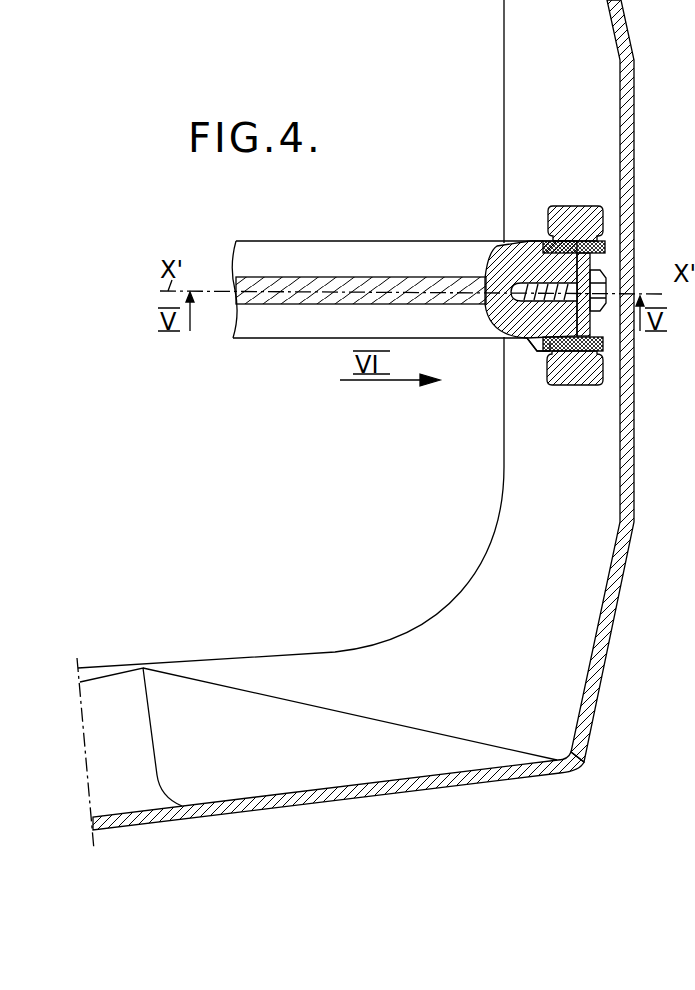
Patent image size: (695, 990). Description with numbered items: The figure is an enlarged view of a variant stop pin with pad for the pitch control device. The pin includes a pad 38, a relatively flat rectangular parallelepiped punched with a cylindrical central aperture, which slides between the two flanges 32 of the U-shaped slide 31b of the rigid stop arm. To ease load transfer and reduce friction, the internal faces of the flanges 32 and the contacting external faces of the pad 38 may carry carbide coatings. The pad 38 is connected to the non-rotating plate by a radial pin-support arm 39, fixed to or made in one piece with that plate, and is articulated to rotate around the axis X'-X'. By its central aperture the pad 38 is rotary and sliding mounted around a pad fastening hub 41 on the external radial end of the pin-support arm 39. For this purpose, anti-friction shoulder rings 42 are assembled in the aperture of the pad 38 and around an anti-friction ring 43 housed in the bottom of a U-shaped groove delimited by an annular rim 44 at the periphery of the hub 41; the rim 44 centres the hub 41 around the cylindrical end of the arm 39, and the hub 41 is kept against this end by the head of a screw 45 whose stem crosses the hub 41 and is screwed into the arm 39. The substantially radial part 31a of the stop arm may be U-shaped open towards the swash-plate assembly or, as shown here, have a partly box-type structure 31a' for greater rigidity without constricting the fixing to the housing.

The flanges 32 is at (527, 33).
The substantially radial part 31a is at (338, 799).
The U-shaped slide 31b is at (625, 490).
The partly box-type structure 31a' is at (318, 708).
The pad 38 is at (572, 213).
The pin-support arm 39 is at (503, 297).
The pad fastening hub 41 is at (522, 338).
The anti-friction shoulder rings 42 is at (603, 353).
The anti-friction ring 43 is at (543, 243).
The annular rim 44 is at (603, 246).
The screw 45 is at (510, 297).